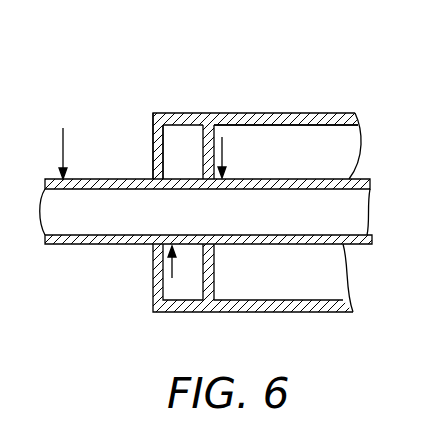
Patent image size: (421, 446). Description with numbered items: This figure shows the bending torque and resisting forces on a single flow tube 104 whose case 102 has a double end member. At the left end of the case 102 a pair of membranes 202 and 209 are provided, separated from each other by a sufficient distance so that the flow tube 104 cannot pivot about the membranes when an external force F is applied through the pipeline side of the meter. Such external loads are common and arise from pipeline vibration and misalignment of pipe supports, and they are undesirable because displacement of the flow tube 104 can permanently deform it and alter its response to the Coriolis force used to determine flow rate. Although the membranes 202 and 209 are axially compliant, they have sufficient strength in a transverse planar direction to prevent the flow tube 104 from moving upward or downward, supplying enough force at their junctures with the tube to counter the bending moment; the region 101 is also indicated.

The upper housing 101 is at (253, 112).
The case 102 is at (228, 113).
The membrane 202 is at (153, 156).
The flow tube 104 is at (312, 223).
The membrane 209 is at (215, 273).
The force F is at (64, 139).